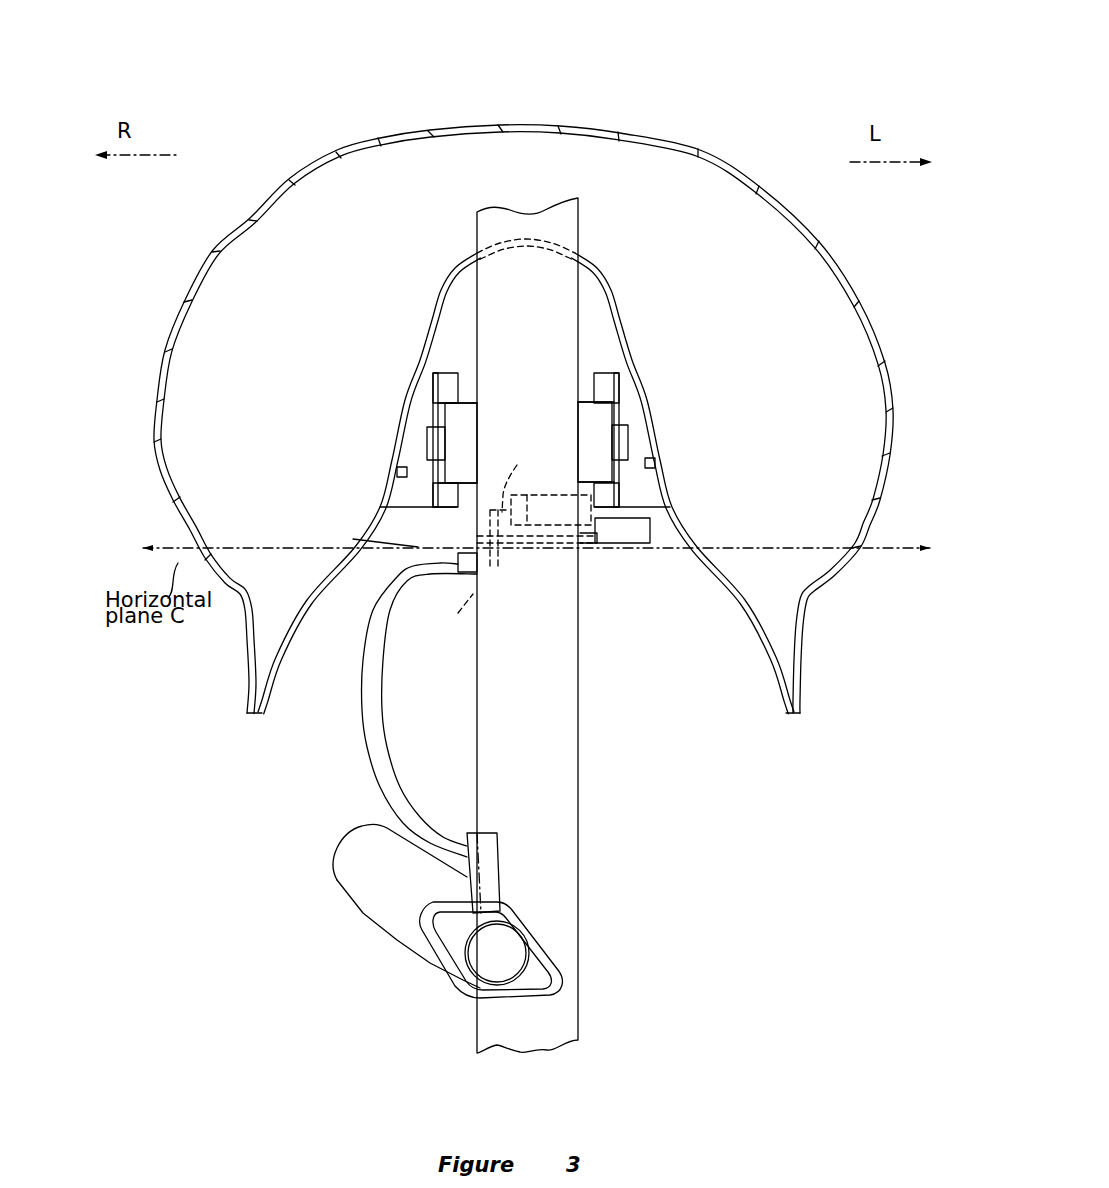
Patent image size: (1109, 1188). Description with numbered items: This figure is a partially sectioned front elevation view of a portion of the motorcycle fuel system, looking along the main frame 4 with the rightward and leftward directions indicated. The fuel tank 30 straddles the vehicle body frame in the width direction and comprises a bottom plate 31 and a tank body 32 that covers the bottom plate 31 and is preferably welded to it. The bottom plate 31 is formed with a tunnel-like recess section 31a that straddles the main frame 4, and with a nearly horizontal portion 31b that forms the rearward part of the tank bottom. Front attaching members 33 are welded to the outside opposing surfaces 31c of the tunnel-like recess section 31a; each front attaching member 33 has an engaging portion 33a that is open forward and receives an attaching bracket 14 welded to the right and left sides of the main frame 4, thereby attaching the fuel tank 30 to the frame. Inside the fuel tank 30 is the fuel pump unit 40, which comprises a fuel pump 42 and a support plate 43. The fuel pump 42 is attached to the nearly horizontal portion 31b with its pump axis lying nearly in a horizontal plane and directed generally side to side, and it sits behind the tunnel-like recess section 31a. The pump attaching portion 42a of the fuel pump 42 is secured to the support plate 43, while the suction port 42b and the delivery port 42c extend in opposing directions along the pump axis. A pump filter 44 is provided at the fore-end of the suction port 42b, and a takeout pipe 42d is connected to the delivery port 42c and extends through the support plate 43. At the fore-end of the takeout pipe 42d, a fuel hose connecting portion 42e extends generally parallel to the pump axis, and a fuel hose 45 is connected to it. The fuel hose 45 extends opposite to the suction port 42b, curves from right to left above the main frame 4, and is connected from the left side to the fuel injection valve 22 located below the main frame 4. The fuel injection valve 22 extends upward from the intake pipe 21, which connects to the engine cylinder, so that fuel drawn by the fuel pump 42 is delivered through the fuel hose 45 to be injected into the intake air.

The fuel tank 30 is at (629, 122).
The tank body 32 is at (265, 192).
The bottom plate 31 is at (424, 316).
The tunnel-like recess section 31a is at (598, 272).
The nearly horizontal portion 31b is at (355, 539).
The outside opposing surfaces 31c is at (397, 471).
The front attaching member 33 is at (423, 396).
The engaging portion 33a is at (456, 408).
The attaching bracket 14 is at (455, 441).
The fuel pump unit 40 is at (565, 562).
The fuel pump 42 is at (597, 507).
The pump attaching portion 42a is at (538, 543).
The suction port 42b is at (593, 553).
The delivery port 42c is at (506, 476).
The takeout pipe 42d is at (498, 570).
The fuel hose connecting portion 42e is at (452, 617).
The support plate 43 is at (477, 543).
The pump filter 44 is at (652, 530).
The main frame 4 is at (548, 730).
The fuel hose 45 is at (365, 753).
The fuel injection valve 22 is at (497, 873).
The intake pipe 21 is at (383, 897).